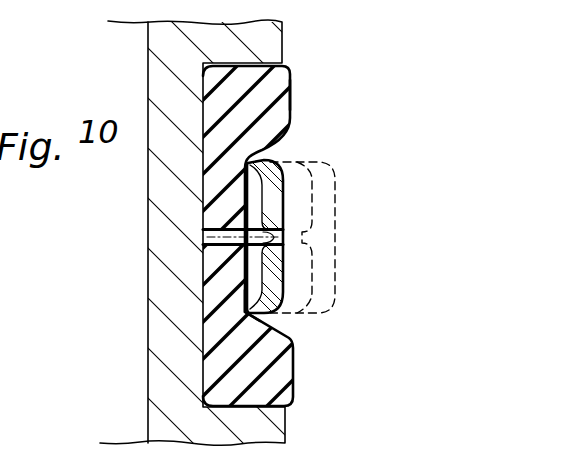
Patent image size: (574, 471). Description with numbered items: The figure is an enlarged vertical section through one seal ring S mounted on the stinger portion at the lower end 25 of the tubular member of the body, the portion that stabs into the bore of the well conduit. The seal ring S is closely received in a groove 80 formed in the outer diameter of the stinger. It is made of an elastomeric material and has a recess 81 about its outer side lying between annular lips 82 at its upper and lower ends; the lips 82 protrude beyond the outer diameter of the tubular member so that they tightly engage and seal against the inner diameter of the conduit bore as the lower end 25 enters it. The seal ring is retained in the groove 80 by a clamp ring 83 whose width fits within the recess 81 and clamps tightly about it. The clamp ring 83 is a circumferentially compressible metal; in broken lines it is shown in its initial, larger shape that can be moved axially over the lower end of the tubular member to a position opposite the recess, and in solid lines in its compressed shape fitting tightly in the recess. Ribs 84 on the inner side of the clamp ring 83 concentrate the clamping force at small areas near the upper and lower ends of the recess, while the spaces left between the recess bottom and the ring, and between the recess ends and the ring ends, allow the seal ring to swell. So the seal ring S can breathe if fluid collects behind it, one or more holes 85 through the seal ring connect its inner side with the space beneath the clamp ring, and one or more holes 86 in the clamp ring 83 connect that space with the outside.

The lower end 25 is at (288, 434).
The groove 80 is at (211, 183).
The recess 81 is at (282, 266).
The annular lip 82 is at (290, 66).
The clamp ring 83 is at (282, 207).
The rib 84 is at (243, 303).
The hole 85 is at (208, 238).
The hole 86 is at (282, 239).
The seal ring S is at (296, 80).